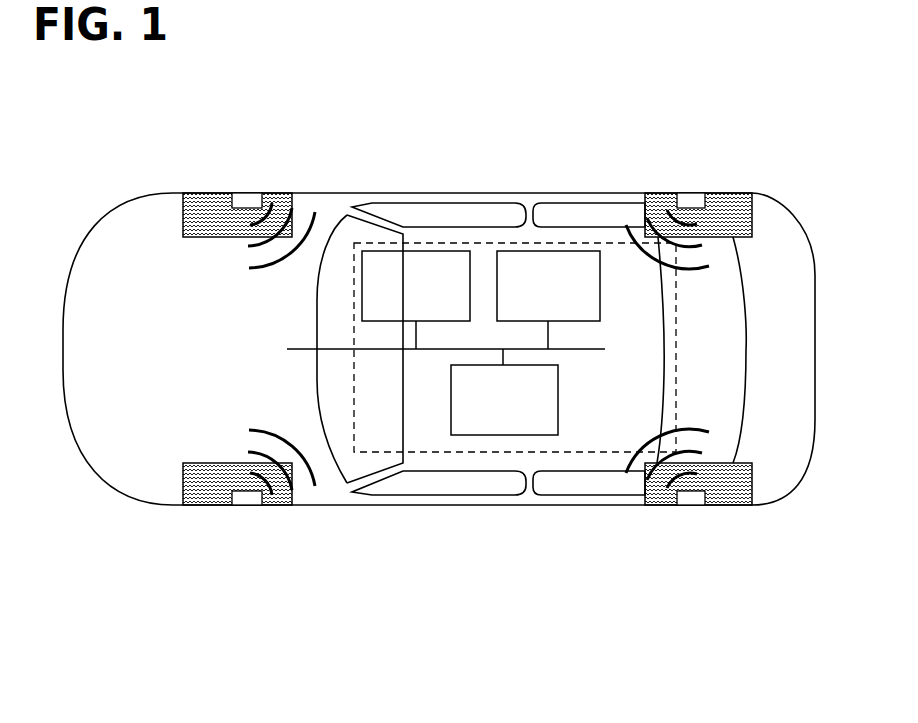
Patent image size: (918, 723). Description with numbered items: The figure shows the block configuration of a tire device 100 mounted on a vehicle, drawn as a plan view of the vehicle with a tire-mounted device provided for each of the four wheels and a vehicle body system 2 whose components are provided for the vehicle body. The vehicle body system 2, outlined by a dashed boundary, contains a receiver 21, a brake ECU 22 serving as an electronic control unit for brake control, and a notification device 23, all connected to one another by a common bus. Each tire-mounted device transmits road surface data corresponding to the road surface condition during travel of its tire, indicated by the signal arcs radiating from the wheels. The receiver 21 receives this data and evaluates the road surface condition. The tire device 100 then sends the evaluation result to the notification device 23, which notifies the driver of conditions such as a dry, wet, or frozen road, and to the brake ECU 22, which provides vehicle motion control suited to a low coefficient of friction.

The tire device 100 is at (364, 174).
The vehicle body system 2 is at (617, 243).
The receiver 21 is at (503, 436).
The brake ECU 22 is at (560, 251).
The notification device 23 is at (428, 251).